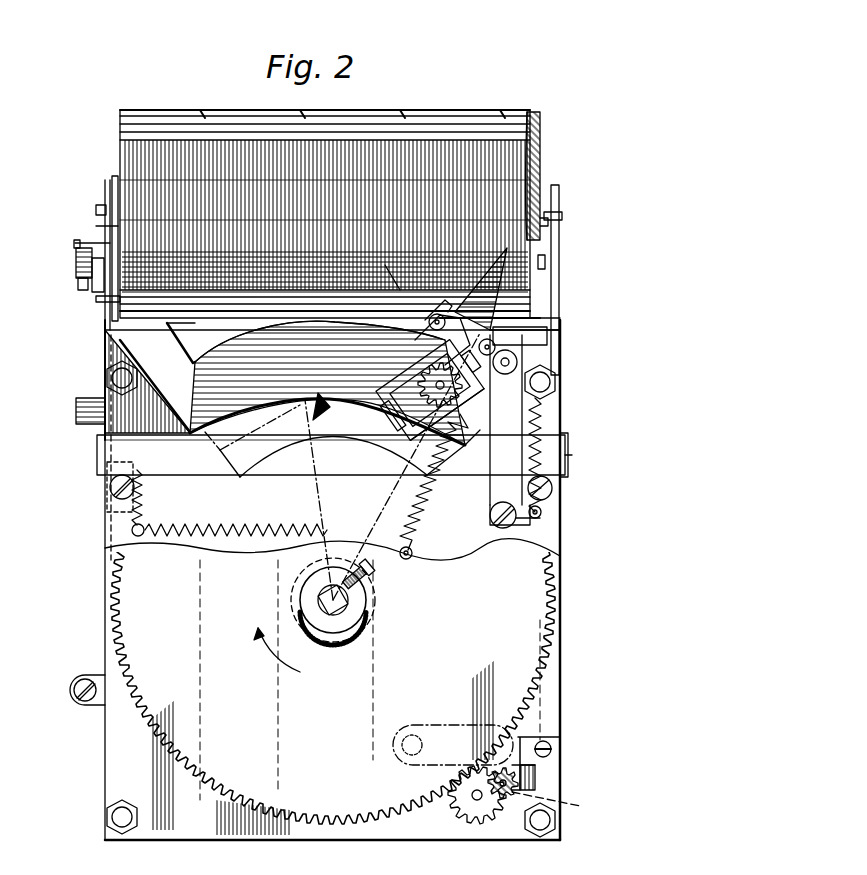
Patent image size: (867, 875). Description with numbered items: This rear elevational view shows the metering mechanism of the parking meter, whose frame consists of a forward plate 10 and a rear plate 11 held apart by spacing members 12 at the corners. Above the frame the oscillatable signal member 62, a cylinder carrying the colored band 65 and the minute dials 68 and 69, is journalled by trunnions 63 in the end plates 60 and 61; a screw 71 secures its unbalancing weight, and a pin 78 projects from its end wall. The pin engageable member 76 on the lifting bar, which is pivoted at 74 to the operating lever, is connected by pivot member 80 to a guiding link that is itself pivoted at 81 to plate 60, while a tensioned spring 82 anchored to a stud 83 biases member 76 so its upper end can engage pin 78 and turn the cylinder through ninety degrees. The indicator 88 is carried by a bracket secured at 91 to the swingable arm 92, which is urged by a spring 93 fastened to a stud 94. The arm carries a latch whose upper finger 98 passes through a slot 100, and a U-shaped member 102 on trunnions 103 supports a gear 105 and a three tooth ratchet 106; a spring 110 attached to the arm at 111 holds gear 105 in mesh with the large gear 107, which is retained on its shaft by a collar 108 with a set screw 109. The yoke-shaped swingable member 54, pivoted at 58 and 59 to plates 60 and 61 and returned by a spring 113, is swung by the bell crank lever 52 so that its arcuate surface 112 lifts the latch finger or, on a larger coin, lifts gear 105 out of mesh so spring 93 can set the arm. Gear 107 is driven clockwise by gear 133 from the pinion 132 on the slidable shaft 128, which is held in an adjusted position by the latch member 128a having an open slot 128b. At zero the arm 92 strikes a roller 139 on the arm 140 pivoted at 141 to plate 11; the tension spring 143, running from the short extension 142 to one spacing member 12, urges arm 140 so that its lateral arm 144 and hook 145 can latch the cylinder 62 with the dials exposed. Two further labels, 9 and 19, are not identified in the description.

The arcuate cam edge 9 is at (330, 407).
The forward plate 10 is at (235, 355).
The rear plate 11 is at (395, 340).
The spacing members 12 is at (107, 378).
The roller surface 19 is at (388, 292).
The bell crank lever 52 is at (76, 406).
The swingable member 54 is at (200, 472).
The pivot 58 is at (97, 445).
The pivot 59 is at (572, 450).
The end plate 60 is at (105, 325).
The end plate 61 is at (565, 300).
The oscillatable signal member 62 is at (557, 130).
The trunnions 63 is at (96, 210).
The horizontal band 65 is at (515, 190).
The scale 68 is at (120, 298).
The scale 69 is at (135, 120).
The screw 71 is at (545, 270).
The pivot 74 is at (74, 690).
The pin engageable member 76 is at (112, 182).
The pin 78 is at (105, 226).
The pivot member 80 is at (76, 262).
The pivot 81 is at (88, 289).
The tensioned spring 82 is at (92, 276).
The stud 83 is at (74, 246).
The indicator 88 is at (540, 318).
The securing point 91 is at (495, 325).
The swingable arm 92 is at (335, 493).
The spring 93 is at (250, 520).
The stud 94 is at (132, 530).
The upper finger 98 is at (415, 353).
The slot 100 is at (455, 340).
The U-shaped member 102 is at (396, 388).
The trunnions 103 is at (396, 375).
The gear member 105 is at (440, 452).
The three tooth ratchet member 106 is at (400, 365).
The large gear 107 is at (535, 628).
The collar 108 is at (360, 617).
The set screw 109 is at (380, 590).
The spring 110 is at (440, 486).
The attachment point 111 is at (412, 552).
The arcuate surface 112 is at (318, 430).
The spring 113 is at (146, 510).
The slidable shaft 128 is at (520, 790).
The latch member 128a is at (545, 778).
The open slot 128b is at (548, 760).
The pinion 132 is at (567, 802).
The gear 133 is at (477, 820).
The roller 139 is at (517, 360).
The arm 140 is at (497, 500).
The pivot 141 is at (545, 518).
The short extension 142 is at (541, 512).
The tension spring 143 is at (541, 425).
The arm 144 is at (560, 332).
The hook 145 is at (548, 222).